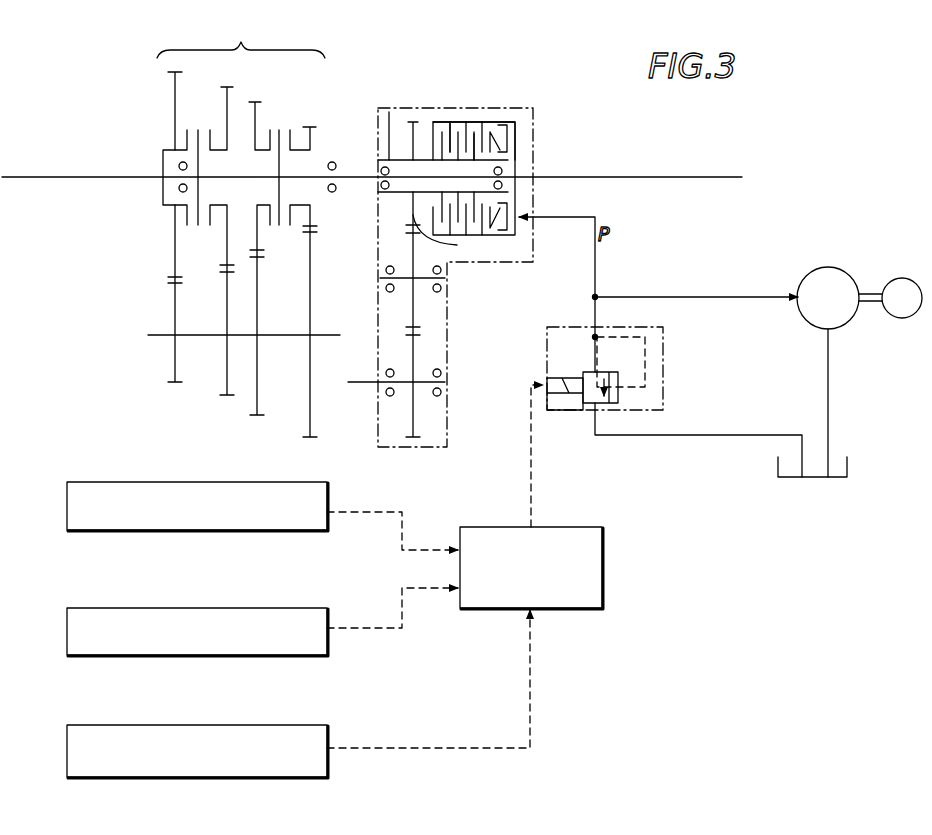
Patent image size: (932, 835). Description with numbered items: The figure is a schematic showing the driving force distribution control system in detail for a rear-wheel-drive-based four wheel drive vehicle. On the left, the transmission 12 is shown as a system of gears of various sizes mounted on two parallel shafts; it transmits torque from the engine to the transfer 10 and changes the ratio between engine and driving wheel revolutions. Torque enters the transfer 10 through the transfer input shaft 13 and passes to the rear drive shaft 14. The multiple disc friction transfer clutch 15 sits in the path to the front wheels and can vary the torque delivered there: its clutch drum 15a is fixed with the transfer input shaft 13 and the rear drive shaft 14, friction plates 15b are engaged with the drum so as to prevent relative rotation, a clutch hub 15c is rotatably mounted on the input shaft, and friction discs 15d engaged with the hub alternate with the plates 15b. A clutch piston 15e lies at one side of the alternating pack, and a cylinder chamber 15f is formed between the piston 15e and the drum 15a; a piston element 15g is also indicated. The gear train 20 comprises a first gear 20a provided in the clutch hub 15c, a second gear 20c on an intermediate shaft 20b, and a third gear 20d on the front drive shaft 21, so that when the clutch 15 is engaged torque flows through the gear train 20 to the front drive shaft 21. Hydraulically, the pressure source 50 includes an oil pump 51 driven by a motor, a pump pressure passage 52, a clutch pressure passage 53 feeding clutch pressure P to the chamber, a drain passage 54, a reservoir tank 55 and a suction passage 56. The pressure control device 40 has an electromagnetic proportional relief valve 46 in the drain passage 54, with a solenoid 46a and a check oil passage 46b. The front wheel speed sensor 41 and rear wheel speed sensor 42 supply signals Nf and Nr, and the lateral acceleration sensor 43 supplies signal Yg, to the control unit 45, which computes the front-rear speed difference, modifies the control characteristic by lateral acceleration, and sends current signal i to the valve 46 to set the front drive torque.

The transfer mechanism 10 is at (539, 106).
The transmission 12 is at (244, 231).
The transfer input shaft 13 is at (353, 177).
The rear drive shaft 14 is at (658, 177).
The multiple disc friction transfer clutch 15 is at (473, 120).
The clutch drum 15a is at (509, 120).
The friction plates 15b is at (448, 125).
The clutch hub 15c is at (390, 112).
The friction discs 15d is at (477, 133).
The clutch piston 15e is at (500, 146).
The cylinder chamber 15f is at (508, 208).
The piston 15g is at (502, 132).
The gear train 20 is at (442, 311).
The first gear 20a is at (457, 245).
The intermediate shaft 20b is at (447, 271).
The second gear 20c is at (417, 323).
The third gear 20d is at (412, 363).
The front drive shaft 21 is at (358, 383).
The pressure control device 40 is at (700, 497).
The front wheel revolution speed sensor 41 is at (202, 482).
The rear wheel revolution speed sensor 42 is at (188, 608).
The lateral acceleration sensor 43 is at (190, 725).
The control unit 45 is at (578, 527).
The electromagnetic proportional relief valve 46 is at (663, 385).
The solenoid 46a is at (568, 386).
The check oil passage 46b is at (647, 357).
The pressure source 50 is at (752, 271).
The oil pump 51 is at (817, 268).
The pump pressure passage 52 is at (662, 296).
The clutch pressure passage 53 is at (597, 278).
The drain passage 54 is at (735, 434).
The reservoir tank 55 is at (847, 467).
The suction passage 56 is at (828, 393).